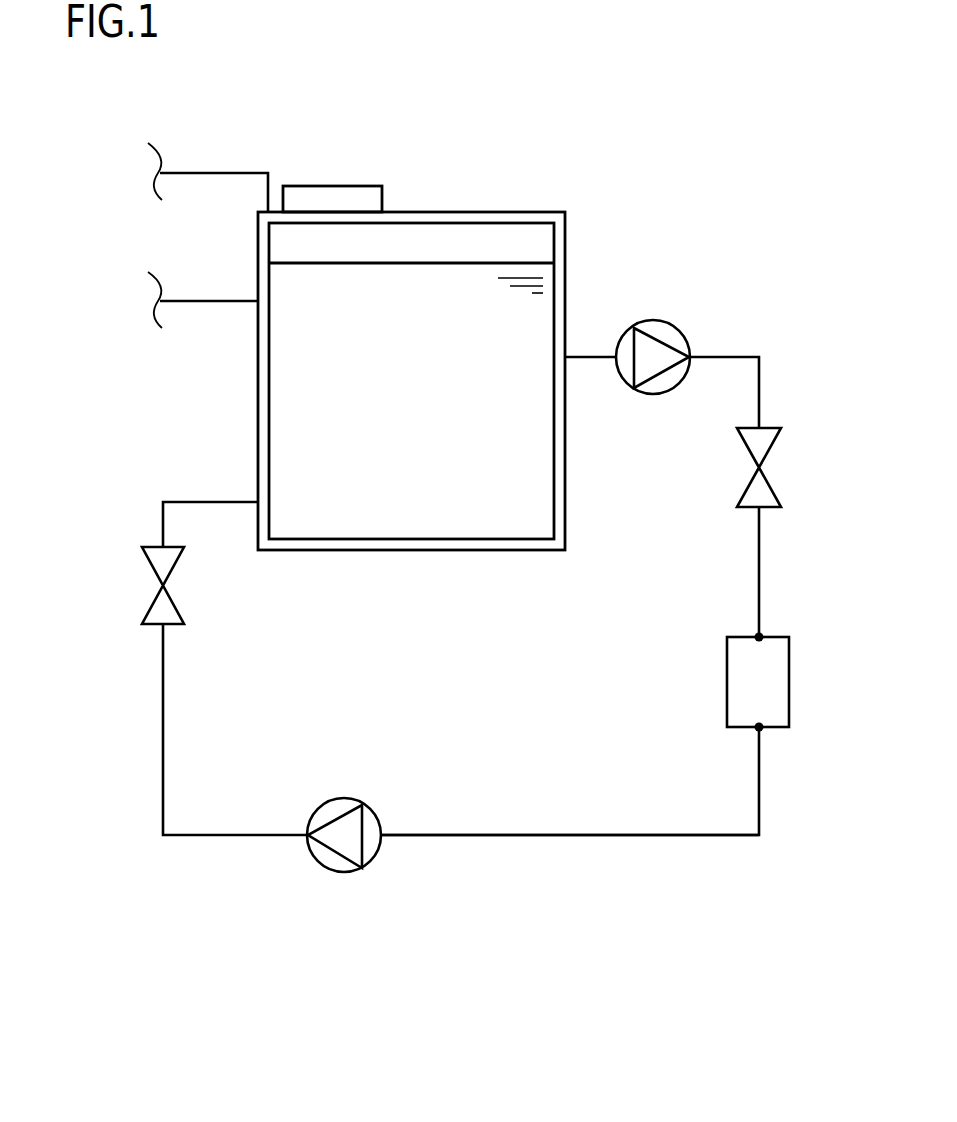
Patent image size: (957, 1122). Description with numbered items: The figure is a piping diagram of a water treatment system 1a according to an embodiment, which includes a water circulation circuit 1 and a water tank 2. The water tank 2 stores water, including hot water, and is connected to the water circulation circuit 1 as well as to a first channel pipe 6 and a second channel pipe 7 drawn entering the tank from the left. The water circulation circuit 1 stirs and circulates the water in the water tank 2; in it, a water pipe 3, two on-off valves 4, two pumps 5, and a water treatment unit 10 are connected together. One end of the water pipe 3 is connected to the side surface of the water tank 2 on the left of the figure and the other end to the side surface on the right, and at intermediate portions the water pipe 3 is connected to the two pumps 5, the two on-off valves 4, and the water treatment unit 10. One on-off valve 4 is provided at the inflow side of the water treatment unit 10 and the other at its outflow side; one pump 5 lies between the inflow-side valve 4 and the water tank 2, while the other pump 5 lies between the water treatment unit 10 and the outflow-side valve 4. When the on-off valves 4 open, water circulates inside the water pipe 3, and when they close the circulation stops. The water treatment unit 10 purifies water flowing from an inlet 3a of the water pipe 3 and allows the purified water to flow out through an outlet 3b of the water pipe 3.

The water circulation circuit 1 is at (774, 563).
The water treatment system 1a is at (717, 213).
The water tank 2 is at (567, 233).
The water pipe 3 is at (607, 838).
The inlet 3a is at (762, 636).
The outlet 3b is at (762, 729).
The on-off valve 4 is at (770, 477).
The pump 5 is at (688, 332).
The first channel pipe 6 is at (208, 172).
The second channel pipe 7 is at (208, 300).
The water treatment unit 10 is at (772, 682).